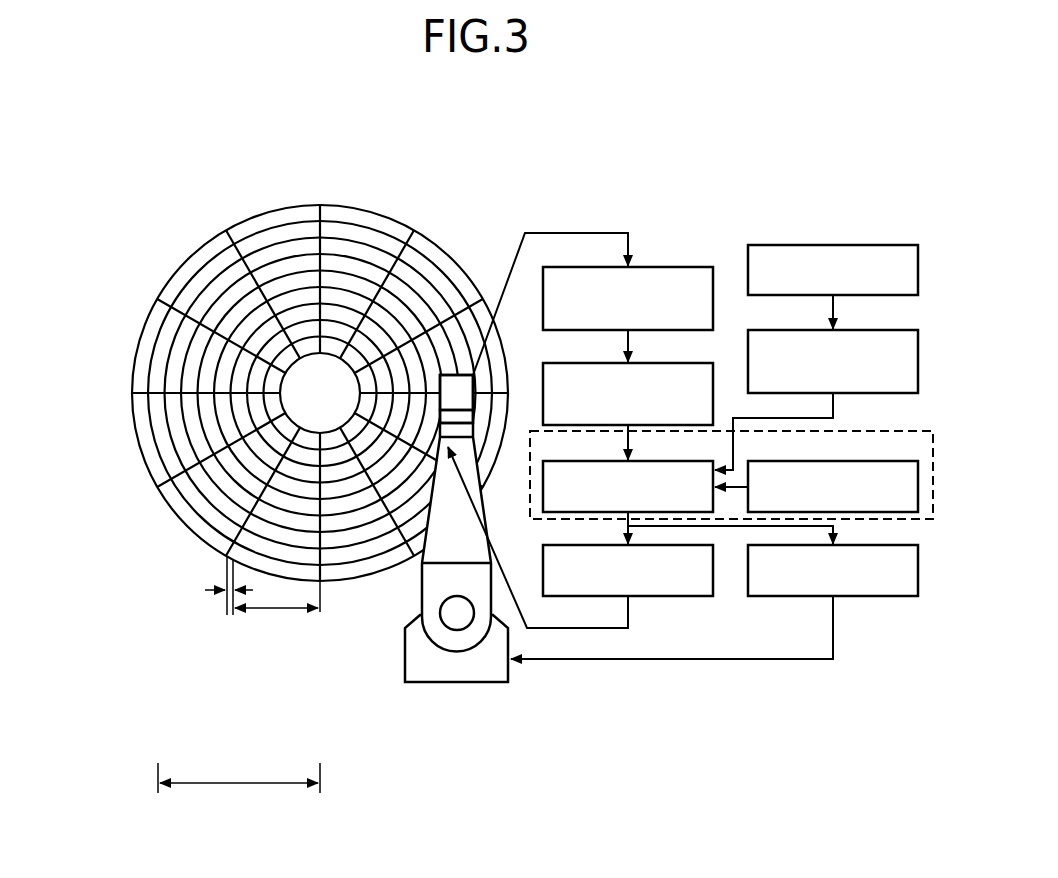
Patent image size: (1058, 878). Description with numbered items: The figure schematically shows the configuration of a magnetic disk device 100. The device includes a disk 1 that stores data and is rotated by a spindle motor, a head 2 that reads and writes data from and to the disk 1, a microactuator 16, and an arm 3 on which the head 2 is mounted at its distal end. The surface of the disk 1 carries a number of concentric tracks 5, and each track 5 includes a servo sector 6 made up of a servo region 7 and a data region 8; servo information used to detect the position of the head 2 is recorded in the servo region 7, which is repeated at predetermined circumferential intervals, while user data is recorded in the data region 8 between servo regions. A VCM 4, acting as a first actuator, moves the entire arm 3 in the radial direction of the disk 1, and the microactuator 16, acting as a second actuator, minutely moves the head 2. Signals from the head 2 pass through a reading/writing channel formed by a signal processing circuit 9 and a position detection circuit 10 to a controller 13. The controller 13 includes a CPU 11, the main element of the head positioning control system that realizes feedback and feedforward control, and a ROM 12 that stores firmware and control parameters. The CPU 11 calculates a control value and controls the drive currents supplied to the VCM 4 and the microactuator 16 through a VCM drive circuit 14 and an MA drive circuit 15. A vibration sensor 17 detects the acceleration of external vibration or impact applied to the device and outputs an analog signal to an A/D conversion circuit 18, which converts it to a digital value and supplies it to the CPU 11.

The magnetic disk device 100 is at (380, 145).
The disk 1 is at (132, 371).
The head 2 is at (440, 372).
The arm 3 is at (457, 637).
The VCM 4 is at (478, 682).
The track 5 is at (137, 354).
The servo sector 6 is at (237, 786).
The servo region 7 is at (230, 617).
The data region 8 is at (275, 610).
The signal processing circuit 9 is at (672, 268).
The position detection circuit 10 is at (672, 364).
The CPU 11 is at (672, 462).
The ROM 12 is at (873, 512).
The controller 13 is at (882, 432).
The VCM drive circuit 14 is at (878, 596).
The MA drive circuit 15 is at (673, 596).
The microactuator 16 is at (466, 416).
The vibration sensor 17 is at (877, 246).
The A/D conversion circuit 18 is at (877, 331).